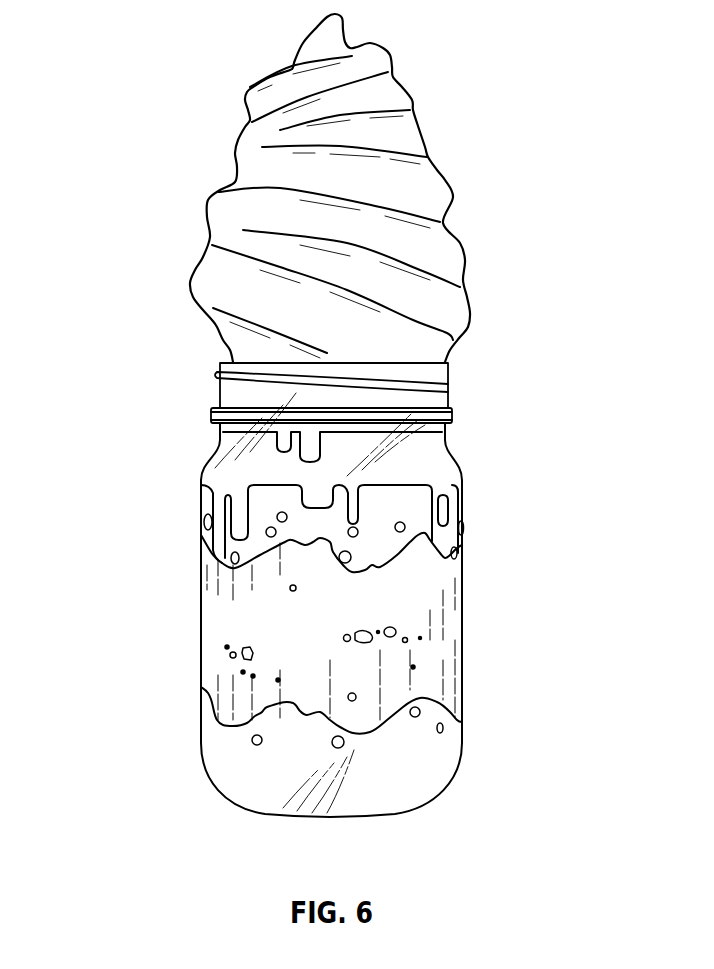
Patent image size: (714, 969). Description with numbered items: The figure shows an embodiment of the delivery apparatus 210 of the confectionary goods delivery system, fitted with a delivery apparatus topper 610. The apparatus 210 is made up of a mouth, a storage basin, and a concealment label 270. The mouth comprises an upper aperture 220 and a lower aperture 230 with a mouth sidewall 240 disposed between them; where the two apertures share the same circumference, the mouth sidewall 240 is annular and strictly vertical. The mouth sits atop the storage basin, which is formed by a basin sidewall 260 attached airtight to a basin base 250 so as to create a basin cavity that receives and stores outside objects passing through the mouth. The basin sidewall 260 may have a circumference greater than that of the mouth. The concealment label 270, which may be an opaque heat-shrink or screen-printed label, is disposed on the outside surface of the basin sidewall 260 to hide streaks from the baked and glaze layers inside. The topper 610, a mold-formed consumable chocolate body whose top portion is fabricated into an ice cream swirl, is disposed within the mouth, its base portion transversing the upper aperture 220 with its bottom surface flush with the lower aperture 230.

The delivery apparatus 210 is at (133, 41).
The upper aperture 220 is at (227, 360).
The lower aperture 230 is at (435, 418).
The mouth sidewall 240 is at (219, 393).
The basin base 250 is at (390, 817).
The basin sidewall 260 is at (463, 567).
The concealment label 270 is at (221, 621).
The delivery apparatus topper 610 is at (431, 191).